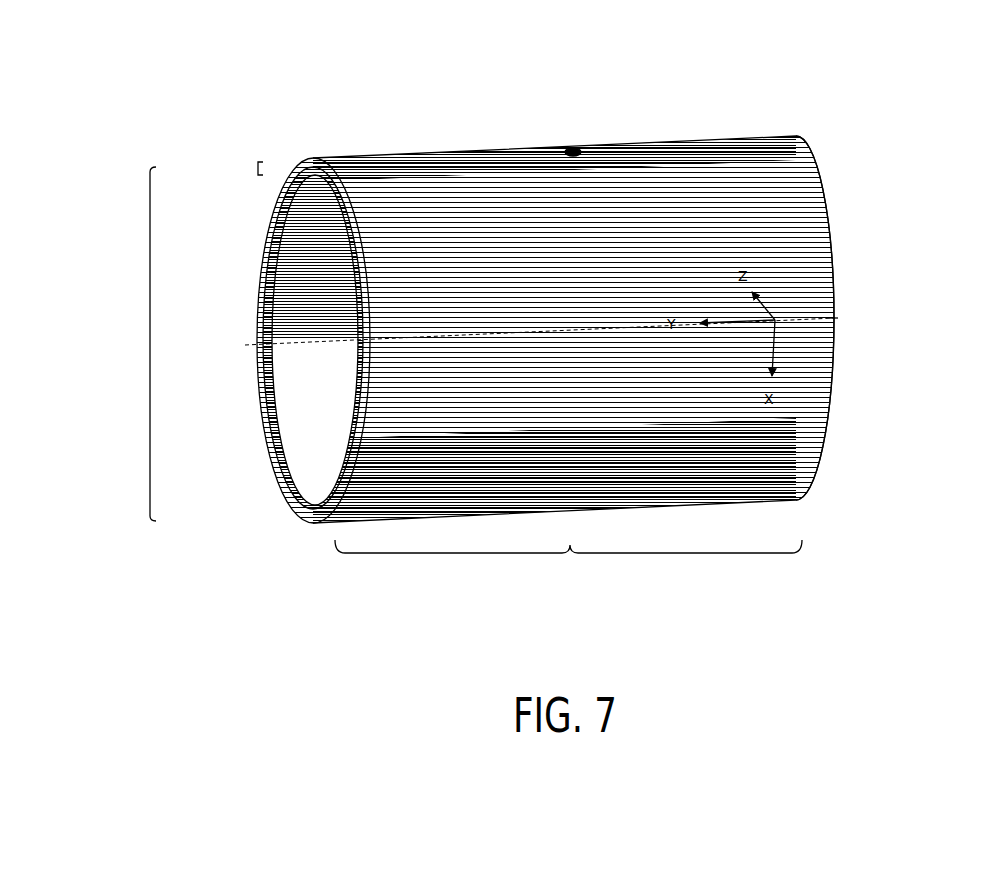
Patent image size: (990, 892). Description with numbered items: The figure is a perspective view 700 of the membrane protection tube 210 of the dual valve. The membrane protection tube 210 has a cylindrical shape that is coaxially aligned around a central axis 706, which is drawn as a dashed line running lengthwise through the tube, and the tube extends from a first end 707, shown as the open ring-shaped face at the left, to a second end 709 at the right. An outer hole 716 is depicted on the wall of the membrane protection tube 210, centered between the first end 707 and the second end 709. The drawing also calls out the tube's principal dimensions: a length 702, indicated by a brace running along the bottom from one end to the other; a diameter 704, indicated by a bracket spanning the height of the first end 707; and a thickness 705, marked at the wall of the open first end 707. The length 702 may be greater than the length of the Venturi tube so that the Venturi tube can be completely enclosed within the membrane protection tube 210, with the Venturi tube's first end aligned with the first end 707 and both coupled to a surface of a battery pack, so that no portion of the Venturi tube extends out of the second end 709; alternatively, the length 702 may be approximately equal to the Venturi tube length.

The perspective view 700 is at (908, 46).
The membrane protection tube 210 is at (798, 98).
The second end 709 is at (827, 140).
The first end 707 is at (293, 138).
The thickness 705 is at (257, 169).
The outer hole 716 is at (582, 152).
The central axis 706 is at (836, 318).
The diameter 704 is at (148, 348).
The length 702 is at (560, 562).